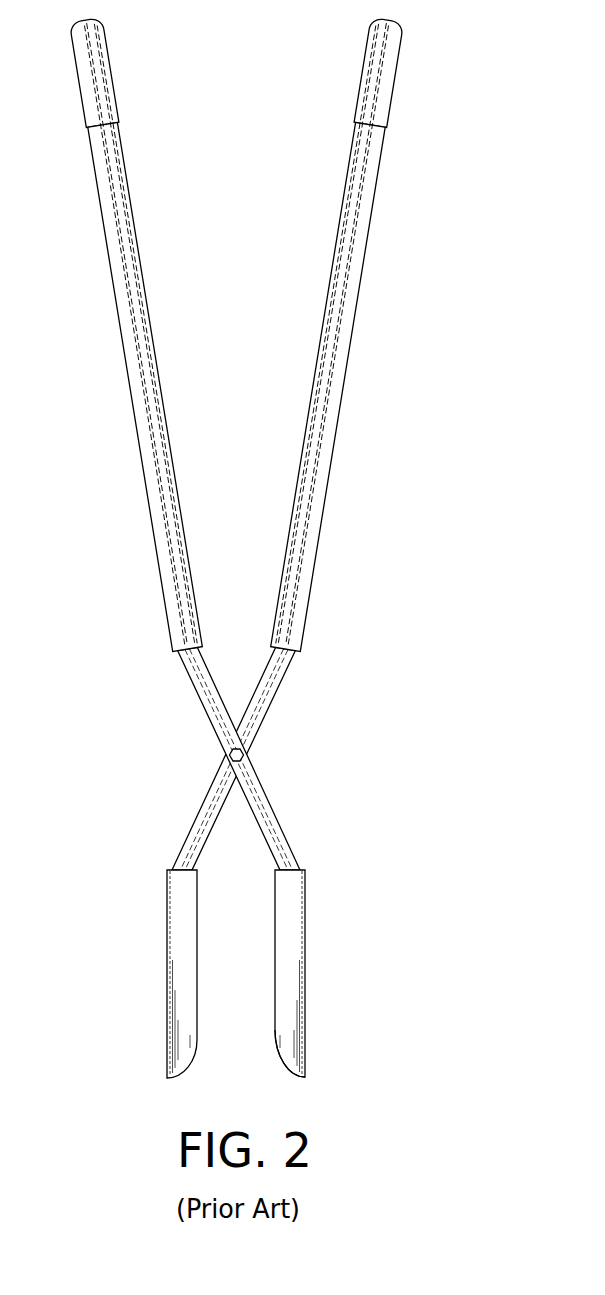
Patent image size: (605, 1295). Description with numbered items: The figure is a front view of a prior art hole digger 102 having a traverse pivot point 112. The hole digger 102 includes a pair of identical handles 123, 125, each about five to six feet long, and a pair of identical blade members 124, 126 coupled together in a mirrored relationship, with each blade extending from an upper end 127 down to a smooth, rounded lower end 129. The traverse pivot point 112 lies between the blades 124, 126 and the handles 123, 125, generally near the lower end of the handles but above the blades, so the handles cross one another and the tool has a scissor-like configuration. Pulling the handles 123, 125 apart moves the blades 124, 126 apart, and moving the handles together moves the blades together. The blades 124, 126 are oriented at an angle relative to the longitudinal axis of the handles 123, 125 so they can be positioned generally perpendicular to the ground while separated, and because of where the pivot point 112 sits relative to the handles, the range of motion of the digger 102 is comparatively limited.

The hole digger 102 is at (418, 518).
The traverse pivot point 112 is at (244, 752).
The handle 123 is at (123, 359).
The handle 125 is at (349, 352).
The upper end 127 is at (291, 868).
The blade member 124 is at (168, 963).
The blade member 126 is at (306, 960).
The lower end 129 is at (296, 1068).